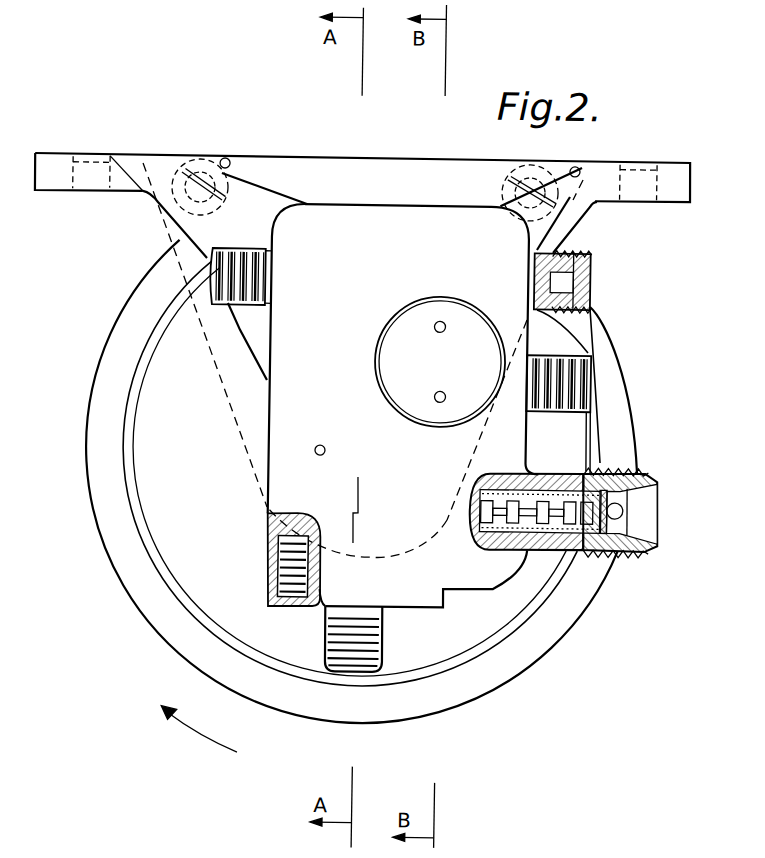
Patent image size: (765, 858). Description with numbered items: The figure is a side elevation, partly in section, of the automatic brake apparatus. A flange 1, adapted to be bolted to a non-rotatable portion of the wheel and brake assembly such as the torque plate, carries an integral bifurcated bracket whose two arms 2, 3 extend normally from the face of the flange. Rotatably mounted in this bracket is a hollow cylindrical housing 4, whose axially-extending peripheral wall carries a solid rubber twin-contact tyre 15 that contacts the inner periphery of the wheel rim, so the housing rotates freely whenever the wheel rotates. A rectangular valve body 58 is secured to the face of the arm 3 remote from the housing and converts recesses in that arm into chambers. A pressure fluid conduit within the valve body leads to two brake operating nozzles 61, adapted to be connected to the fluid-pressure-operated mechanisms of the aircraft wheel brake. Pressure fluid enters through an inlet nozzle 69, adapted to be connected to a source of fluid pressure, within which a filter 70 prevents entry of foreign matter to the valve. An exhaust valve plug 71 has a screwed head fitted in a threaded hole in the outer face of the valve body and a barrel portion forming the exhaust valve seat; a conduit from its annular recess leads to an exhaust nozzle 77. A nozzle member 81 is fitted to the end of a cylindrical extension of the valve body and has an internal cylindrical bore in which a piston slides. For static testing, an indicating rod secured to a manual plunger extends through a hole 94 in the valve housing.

The flange 1 is at (600, 170).
The arm 2 is at (550, 229).
The arm 3 is at (195, 230).
The hollow cylindrical housing 4 is at (543, 610).
The solid rubber twin-contact tyre 15 is at (512, 665).
The valve body 58 is at (276, 430).
The brake operating nozzle 61 is at (210, 266).
The inlet nozzle 69 is at (627, 549).
The filter 70 is at (490, 539).
The exhaust valve plug 71 is at (398, 326).
The exhaust nozzle 77 is at (589, 355).
The nozzle member 81 is at (386, 632).
The hole 94 is at (325, 447).